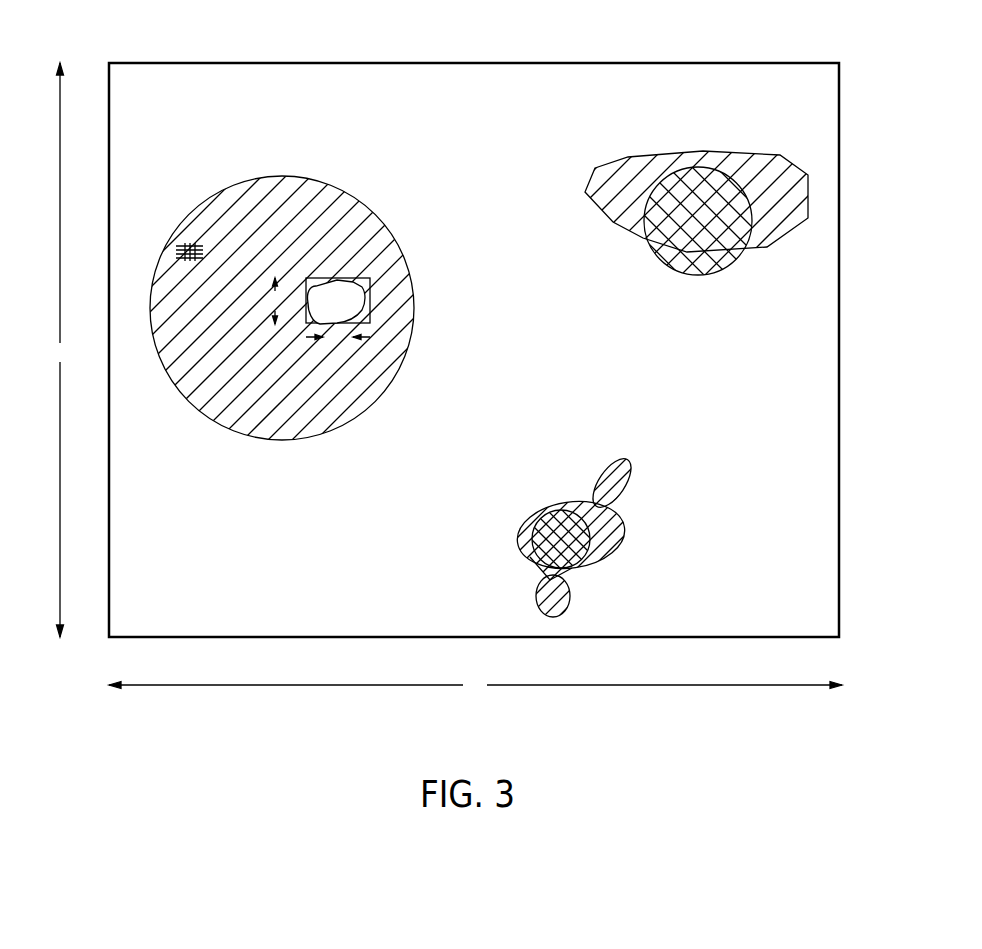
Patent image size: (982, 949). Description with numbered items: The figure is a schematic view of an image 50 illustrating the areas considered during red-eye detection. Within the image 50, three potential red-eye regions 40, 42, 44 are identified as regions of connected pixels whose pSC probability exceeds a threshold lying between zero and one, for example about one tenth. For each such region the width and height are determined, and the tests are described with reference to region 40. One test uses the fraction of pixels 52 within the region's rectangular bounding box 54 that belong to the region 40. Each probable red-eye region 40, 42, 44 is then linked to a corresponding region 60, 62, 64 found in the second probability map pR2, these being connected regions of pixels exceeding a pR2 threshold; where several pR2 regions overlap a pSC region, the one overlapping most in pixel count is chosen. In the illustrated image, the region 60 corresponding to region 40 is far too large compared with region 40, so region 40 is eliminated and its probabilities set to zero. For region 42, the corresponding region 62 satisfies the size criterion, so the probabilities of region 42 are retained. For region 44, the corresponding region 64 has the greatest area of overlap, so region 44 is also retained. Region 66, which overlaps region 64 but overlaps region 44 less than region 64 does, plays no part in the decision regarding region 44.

The image 50 is at (320, 62).
The corresponding region in pR2 60 is at (270, 177).
The pixels 52 is at (183, 249).
The rectangular bounding box 54 is at (336, 276).
The potential red-eye region 40 is at (358, 279).
The corresponding region in pR2 62 is at (632, 157).
The potential red-eye region 42 is at (662, 273).
The potential red-eye region 44 is at (546, 499).
The corresponding region in pR2 64 is at (600, 555).
The overlapping region 66 is at (623, 491).